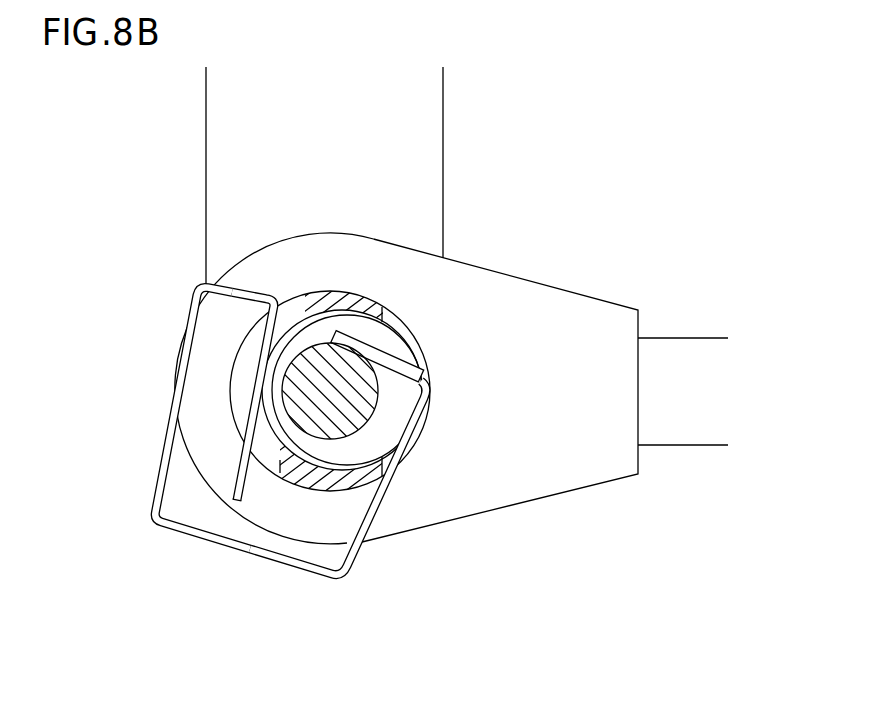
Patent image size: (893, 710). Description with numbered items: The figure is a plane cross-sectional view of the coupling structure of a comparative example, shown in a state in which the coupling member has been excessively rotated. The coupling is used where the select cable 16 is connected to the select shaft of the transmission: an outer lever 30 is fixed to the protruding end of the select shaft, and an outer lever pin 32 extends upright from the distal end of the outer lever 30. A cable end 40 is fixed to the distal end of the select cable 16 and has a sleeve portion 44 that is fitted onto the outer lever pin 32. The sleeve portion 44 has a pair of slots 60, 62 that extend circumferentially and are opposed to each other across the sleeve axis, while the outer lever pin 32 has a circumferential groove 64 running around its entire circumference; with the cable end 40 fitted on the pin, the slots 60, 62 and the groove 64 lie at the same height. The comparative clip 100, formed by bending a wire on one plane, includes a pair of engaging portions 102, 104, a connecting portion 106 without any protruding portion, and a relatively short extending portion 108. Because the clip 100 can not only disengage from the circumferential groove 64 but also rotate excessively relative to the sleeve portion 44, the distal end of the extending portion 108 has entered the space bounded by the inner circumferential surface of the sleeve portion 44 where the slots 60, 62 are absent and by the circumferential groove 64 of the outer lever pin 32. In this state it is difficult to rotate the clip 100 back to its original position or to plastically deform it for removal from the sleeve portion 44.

The select cable 16 is at (699, 425).
The outer lever 30 is at (417, 92).
The outer lever pin 32 is at (332, 410).
The cable end 40 is at (620, 272).
The sleeve portion 44 is at (350, 298).
The slot 60 is at (415, 348).
The slot 62 is at (238, 390).
The circumferential groove 64 is at (302, 447).
The clip 100 is at (293, 414).
The engaging portion 102 is at (256, 374).
The engaging portion 104 is at (372, 517).
The connecting portion 106 is at (168, 437).
The extending portion 108 is at (390, 358).